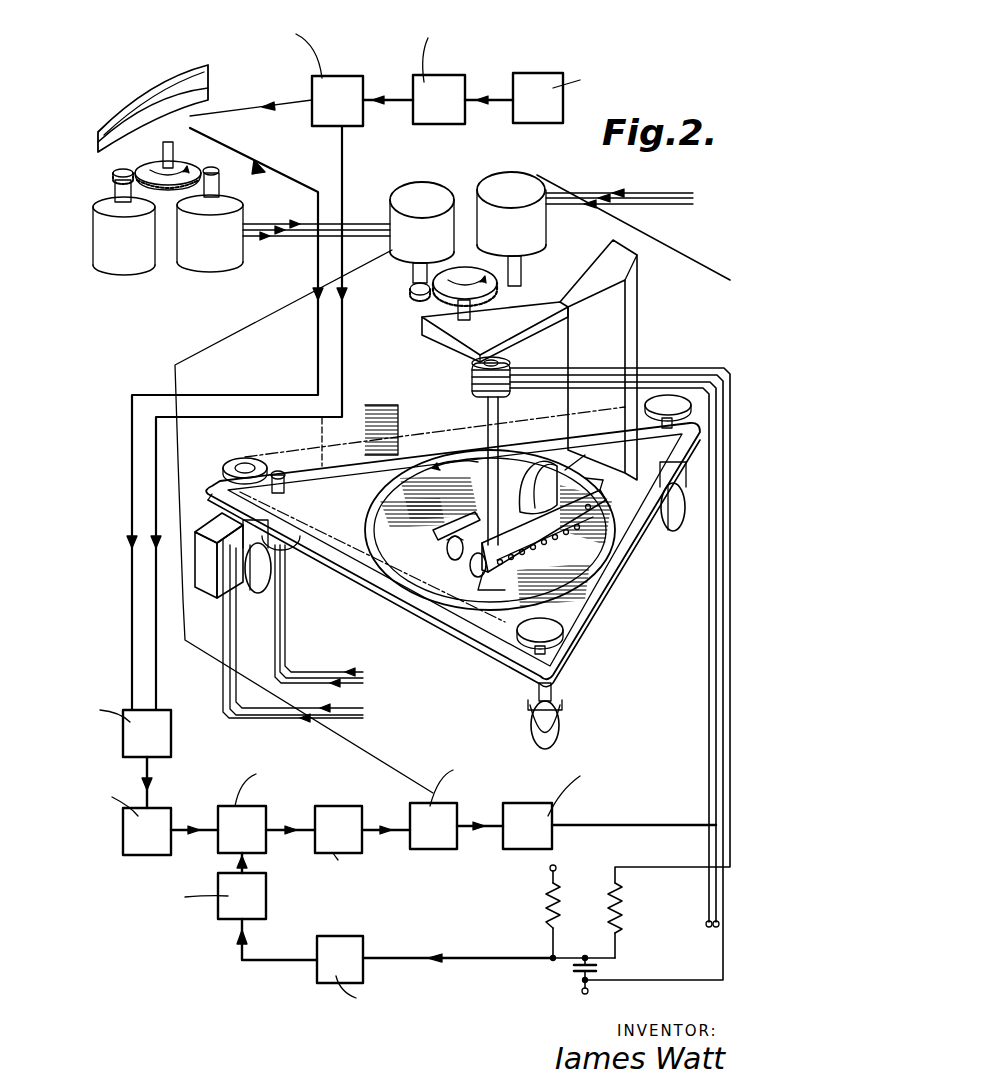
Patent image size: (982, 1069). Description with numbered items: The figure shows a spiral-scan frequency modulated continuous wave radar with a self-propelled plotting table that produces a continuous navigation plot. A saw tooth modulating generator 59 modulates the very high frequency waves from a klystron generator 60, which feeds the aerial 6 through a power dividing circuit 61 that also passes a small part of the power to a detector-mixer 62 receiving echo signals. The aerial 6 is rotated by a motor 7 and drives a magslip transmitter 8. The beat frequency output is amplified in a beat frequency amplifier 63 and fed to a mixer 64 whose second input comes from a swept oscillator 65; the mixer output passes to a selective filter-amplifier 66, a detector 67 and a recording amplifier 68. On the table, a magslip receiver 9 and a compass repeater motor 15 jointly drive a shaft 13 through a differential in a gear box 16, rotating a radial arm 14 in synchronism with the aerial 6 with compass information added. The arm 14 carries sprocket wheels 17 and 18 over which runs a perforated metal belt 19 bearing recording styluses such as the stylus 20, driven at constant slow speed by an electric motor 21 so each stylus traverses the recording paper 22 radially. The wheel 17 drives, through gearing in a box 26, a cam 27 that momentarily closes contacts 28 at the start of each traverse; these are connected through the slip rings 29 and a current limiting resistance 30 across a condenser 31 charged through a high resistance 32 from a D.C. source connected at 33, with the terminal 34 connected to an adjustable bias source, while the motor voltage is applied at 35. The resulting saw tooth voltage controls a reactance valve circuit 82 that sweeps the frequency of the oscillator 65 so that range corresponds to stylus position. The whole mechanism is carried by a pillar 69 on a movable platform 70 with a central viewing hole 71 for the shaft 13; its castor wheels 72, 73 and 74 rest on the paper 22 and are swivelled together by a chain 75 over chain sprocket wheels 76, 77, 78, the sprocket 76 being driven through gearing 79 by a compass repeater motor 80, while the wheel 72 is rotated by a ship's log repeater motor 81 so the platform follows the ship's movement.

The aerial 6 is at (150, 117).
The motor 7 is at (128, 270).
The magslip transmitter 8 is at (232, 262).
The magslip receiver 9 is at (420, 190).
The shaft 13 is at (486, 410).
The radial arm 14 is at (537, 500).
The compass repeater motor 15 is at (503, 180).
The gear box 16 is at (437, 335).
The sprocket wheel 17 is at (480, 578).
The sprocket wheel 18 is at (598, 508).
The perforated metal belt 19 is at (508, 566).
The recording stylus 20 is at (572, 535).
The electric motor 21 is at (572, 468).
The recording paper 22 is at (685, 258).
The gear box 26 is at (472, 570).
The cam 27 is at (448, 554).
The contacts 28 is at (448, 530).
The slip rings 29 is at (470, 379).
The current limiting resistance 30 is at (622, 905).
The condenser 31 is at (574, 968).
The high resistance 32 is at (548, 893).
The D.C. source connection 33 is at (550, 868).
The condenser terminal 34 is at (582, 991).
The motor voltage terminals 35 is at (716, 926).
The saw tooth modulating generator 59 is at (550, 84).
The klystron generator 60 is at (445, 82).
The power dividing circuit 61 is at (345, 82).
The detector-mixer 62 is at (171, 733).
The beat frequency amplifier 63 is at (158, 816).
The mixer 64 is at (253, 812).
The swept oscillator 65 is at (266, 895).
The filter-amplifier 66 is at (342, 812).
The detector 67 is at (440, 812).
The recording amplifier 68 is at (537, 812).
The pillar 69 is at (637, 310).
The movable platform 70 is at (585, 600).
The central viewing hole 71 is at (385, 490).
The castor wheel 72 is at (255, 592).
The castor wheel 73 is at (673, 530).
The castor wheel 74 is at (560, 728).
The chain 75 is at (300, 452).
The chain sprocket wheel 76 is at (240, 460).
The chain sprocket wheel 77 is at (660, 415).
The chain sprocket wheel 78 is at (555, 632).
The gearing 79 is at (285, 478).
The compass repeater motor 80 is at (292, 552).
The ship's log repeater motor 81 is at (205, 585).
The reactance valve circuit 82 is at (352, 950).